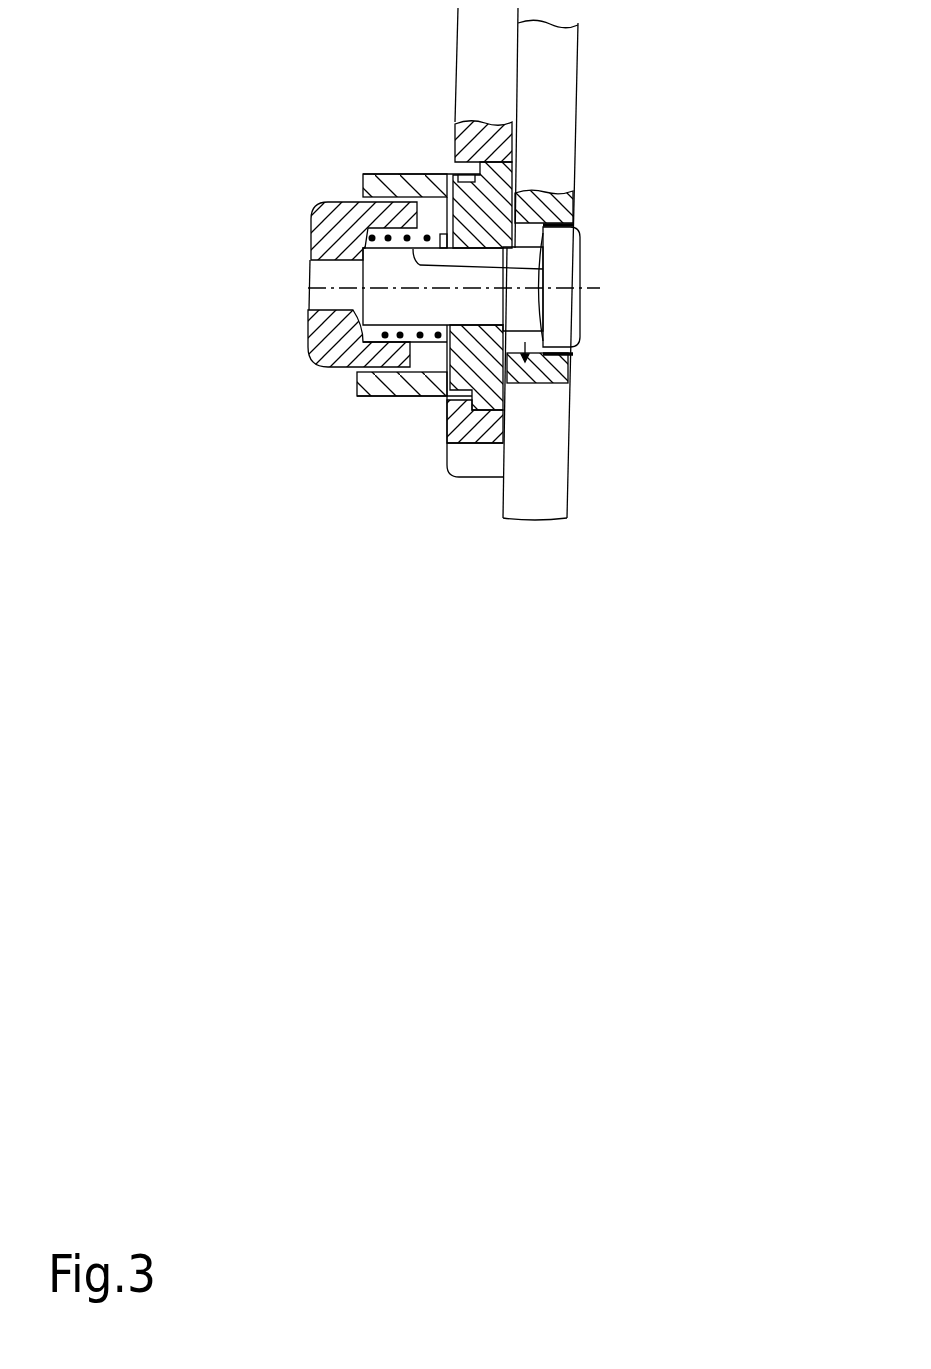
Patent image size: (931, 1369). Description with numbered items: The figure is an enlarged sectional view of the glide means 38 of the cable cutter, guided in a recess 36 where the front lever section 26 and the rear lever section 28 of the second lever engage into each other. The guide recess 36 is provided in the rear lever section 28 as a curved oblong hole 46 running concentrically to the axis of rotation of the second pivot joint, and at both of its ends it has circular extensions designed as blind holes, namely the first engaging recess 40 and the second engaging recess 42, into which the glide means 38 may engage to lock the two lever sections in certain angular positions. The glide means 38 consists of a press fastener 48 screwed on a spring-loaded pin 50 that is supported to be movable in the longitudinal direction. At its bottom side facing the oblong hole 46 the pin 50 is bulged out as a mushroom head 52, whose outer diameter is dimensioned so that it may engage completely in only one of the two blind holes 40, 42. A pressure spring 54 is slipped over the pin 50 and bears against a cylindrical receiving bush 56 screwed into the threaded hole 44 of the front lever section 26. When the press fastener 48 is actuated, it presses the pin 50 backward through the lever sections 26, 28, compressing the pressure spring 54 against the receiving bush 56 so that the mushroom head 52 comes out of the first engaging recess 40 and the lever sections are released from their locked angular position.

The front lever section 26 is at (473, 25).
The rear lever section 28 is at (541, 151).
The guide recess 36 is at (674, 369).
The glide means 38 is at (300, 205).
The first engaging recess 40 is at (682, 224).
The engaging recess 42 is at (523, 232).
The threaded hole 44 is at (468, 422).
The oblong hole 46 is at (527, 362).
The press fastener 48 is at (317, 320).
The spring-loaded pin 50 is at (395, 270).
The mushroom head 52 is at (562, 330).
The pressure spring 54 is at (543, 271).
The cylindrical receiving bush 56 is at (362, 385).